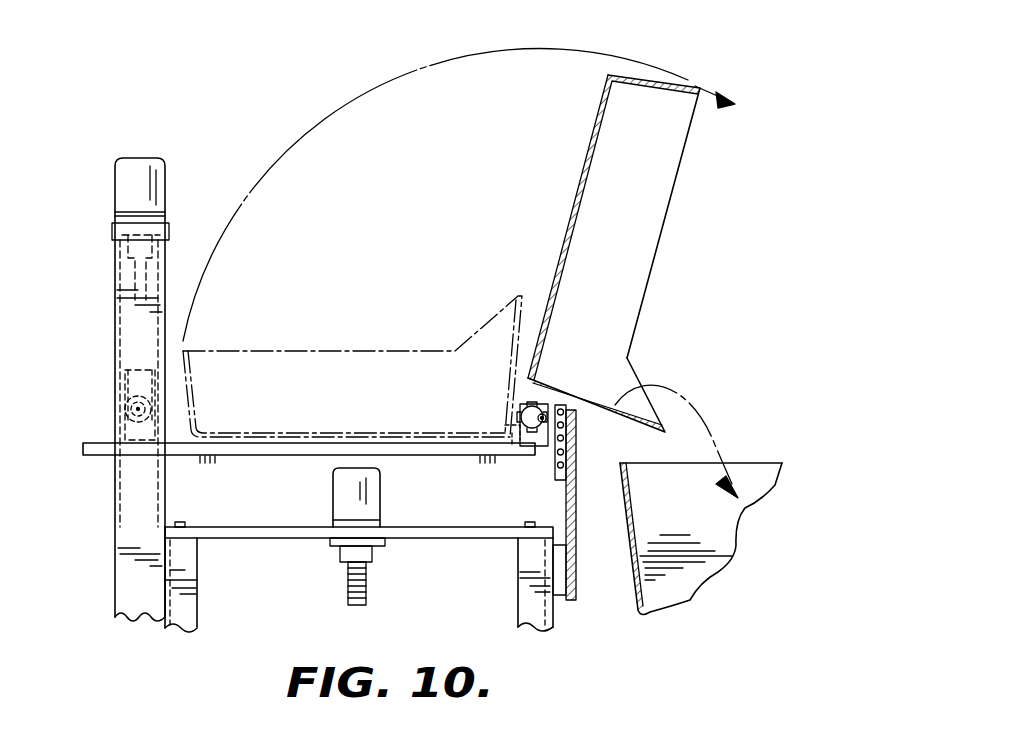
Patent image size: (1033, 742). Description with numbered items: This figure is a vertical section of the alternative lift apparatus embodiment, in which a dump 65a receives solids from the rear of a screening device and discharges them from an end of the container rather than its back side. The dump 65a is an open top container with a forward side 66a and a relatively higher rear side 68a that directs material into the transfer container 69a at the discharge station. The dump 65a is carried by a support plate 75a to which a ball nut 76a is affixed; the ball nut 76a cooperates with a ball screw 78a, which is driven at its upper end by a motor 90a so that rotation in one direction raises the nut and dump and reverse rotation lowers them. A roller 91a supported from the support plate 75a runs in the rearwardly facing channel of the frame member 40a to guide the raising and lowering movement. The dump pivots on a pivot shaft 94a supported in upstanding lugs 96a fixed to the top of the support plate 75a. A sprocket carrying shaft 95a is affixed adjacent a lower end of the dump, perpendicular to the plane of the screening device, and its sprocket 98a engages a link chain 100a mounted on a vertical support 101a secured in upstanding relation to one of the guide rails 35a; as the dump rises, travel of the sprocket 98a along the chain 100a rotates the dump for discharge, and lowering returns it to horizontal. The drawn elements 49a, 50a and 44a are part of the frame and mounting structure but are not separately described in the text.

The motor 90a is at (148, 168).
The ball screw 78a is at (130, 272).
The ball nut 76a is at (122, 378).
The roller 91a is at (126, 413).
The support plate 75a is at (192, 456).
The dump 65a is at (350, 357).
The forward side 66a is at (678, 78).
The rear side 68a is at (633, 390).
The transfer container 69a is at (700, 560).
The pivot shaft 94a is at (540, 416).
The sprocket carrying shaft 95a is at (514, 412).
The upstanding lugs 96a is at (525, 440).
The sprocket 98a is at (545, 412).
The link chain 100a is at (560, 472).
The vertical support 101a is at (578, 452).
The cross bar 49a is at (415, 530).
The guide rail 35a is at (190, 605).
The frame member 40a is at (138, 538).
The motor 50a is at (334, 492).
The bolt 44a is at (349, 583).